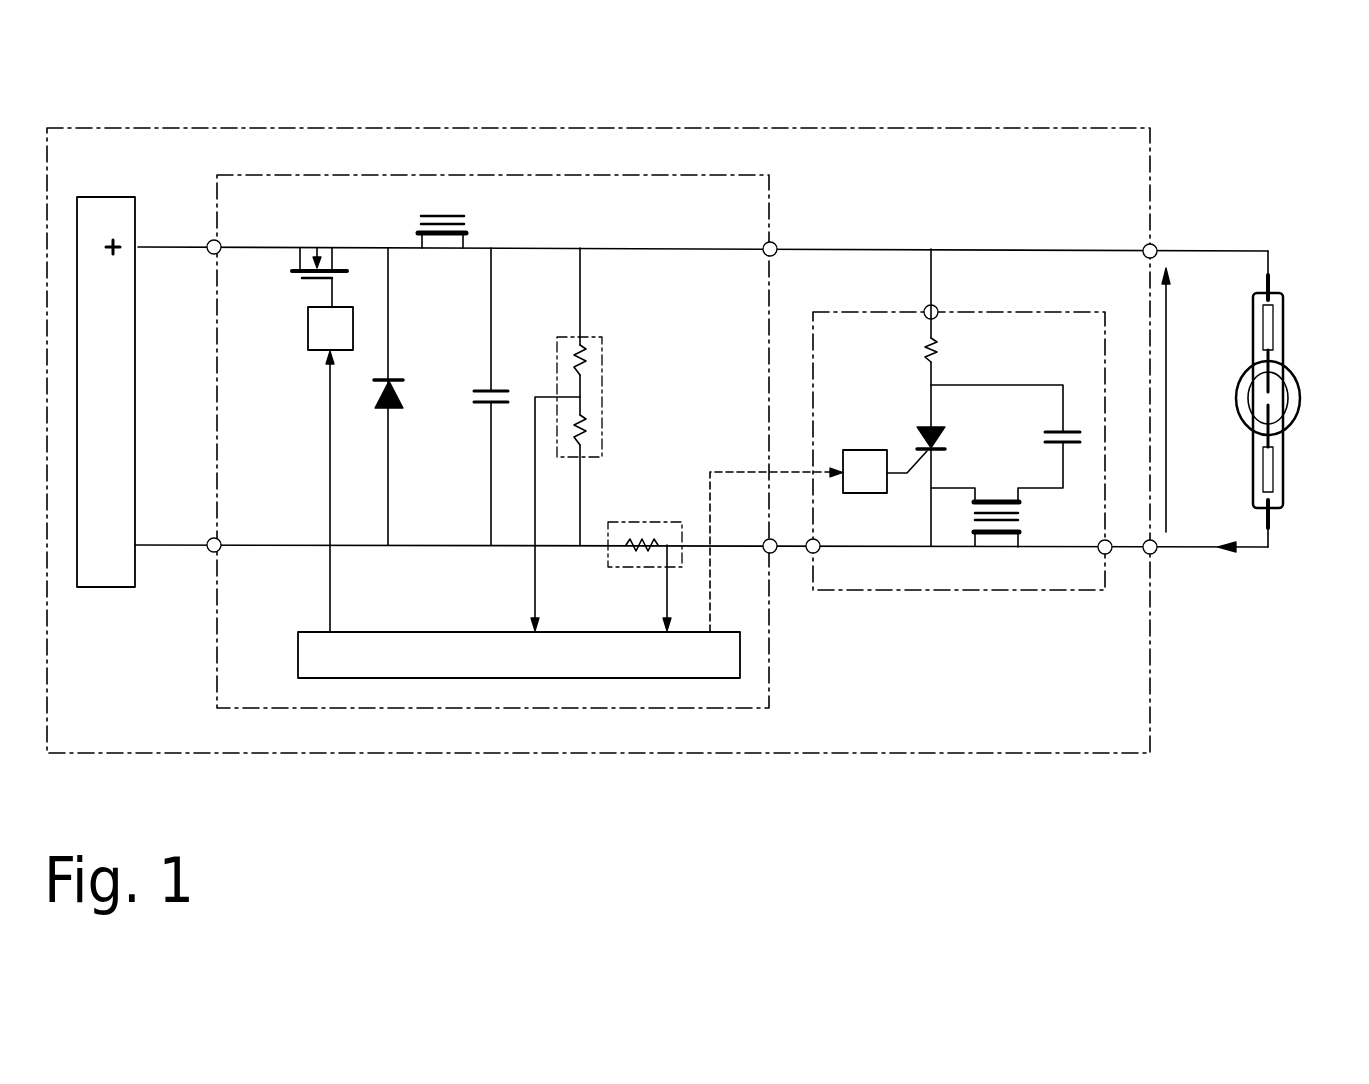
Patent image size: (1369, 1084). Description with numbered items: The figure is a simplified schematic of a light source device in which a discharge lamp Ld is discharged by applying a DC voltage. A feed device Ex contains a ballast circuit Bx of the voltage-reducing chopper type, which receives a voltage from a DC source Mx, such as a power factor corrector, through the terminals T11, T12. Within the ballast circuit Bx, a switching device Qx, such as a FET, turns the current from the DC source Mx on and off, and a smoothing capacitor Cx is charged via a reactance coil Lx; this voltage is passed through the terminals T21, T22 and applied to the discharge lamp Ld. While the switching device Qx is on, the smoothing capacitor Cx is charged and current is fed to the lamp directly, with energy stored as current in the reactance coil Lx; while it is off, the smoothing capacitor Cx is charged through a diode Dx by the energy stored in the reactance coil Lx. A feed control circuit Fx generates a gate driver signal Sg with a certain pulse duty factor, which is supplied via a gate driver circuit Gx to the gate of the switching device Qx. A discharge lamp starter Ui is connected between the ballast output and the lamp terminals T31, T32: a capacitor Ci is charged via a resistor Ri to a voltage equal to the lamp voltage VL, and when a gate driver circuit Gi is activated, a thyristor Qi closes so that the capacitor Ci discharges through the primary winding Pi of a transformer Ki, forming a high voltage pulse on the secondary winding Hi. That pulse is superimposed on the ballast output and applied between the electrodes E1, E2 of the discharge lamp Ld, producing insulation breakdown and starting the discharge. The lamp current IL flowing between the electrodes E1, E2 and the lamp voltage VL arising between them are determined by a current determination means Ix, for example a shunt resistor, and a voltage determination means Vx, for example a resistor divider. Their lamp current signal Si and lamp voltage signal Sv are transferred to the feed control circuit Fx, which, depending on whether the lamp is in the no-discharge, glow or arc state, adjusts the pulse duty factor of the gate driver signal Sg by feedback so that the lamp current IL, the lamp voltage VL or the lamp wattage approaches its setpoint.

The feed device Ex is at (1151, 690).
The ballast circuit Bx is at (770, 690).
The discharge lamp starter Ui is at (1035, 592).
The DC source Mx is at (105, 590).
The terminal T11 is at (213, 243).
The terminal T12 is at (213, 552).
The terminal T21 is at (771, 246).
The terminal T22 is at (771, 553).
The terminal T31 is at (1153, 247).
The terminal T32 is at (1152, 553).
The switching device Qx is at (288, 272).
The gate driver circuit Gx is at (312, 351).
The gate driver signal Sg is at (328, 586).
The diode Dx is at (395, 405).
The reactance coil Lx is at (441, 240).
The smoothing capacitor Cx is at (480, 393).
The voltage determination means Vx is at (603, 372).
The lamp voltage signal Sv is at (535, 586).
The current determination means Ix is at (660, 520).
The lamp current signal Si is at (666, 586).
The starter control signal Su is at (712, 468).
The feed control circuit Fx is at (298, 641).
The resistor Ri is at (935, 349).
The thyristor Qi is at (947, 445).
The gate driver circuit Gi is at (866, 449).
The capacitor Ci is at (1066, 425).
The primary winding Pi is at (991, 500).
The transformer Ki is at (1021, 515).
The secondary winding Hi is at (986, 536).
The lamp voltage VL is at (1185, 400).
The lamp current IL is at (1218, 531).
The discharge lamp Ld is at (1301, 401).
The electrode E1 is at (1272, 410).
The electrode E2 is at (1272, 390).